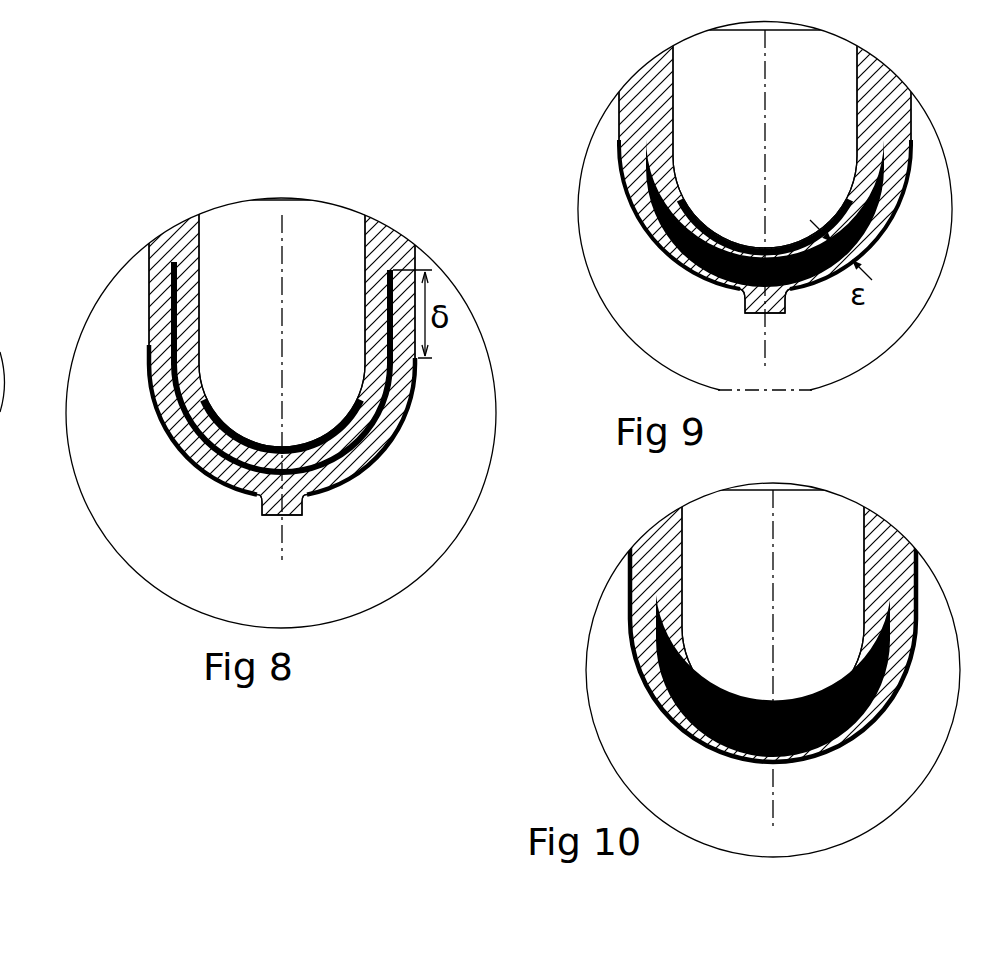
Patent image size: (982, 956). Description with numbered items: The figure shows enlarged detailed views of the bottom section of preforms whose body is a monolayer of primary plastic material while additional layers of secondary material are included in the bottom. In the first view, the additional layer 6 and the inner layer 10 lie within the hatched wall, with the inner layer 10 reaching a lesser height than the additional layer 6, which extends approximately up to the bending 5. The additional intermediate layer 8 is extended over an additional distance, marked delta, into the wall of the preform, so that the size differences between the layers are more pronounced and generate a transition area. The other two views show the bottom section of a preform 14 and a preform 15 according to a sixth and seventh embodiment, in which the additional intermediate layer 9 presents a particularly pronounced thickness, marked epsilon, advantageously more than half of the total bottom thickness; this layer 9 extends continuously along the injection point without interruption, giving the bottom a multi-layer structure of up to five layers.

In FIG. 8, the bending 5 is at (146, 357).
In FIG. 9, the bending 5 is at (910, 142).
In FIG. 10, the bending 5 is at (918, 612).
In FIG. 8, the additional layer 6 is at (194, 467).
In FIG. 9, the additional layer 6 is at (683, 277).
In FIG. 10, the additional layer 6 is at (678, 728).
In FIG. 8, the additional intermediate layer 8 is at (387, 302).
In FIG. 9, the additional intermediate layer 9 is at (672, 181).
In FIG. 10, the additional intermediate layer 9 is at (664, 628).
In FIG. 8, the inner layer 10 is at (210, 428).
In FIG. 9, the inner layer 10 is at (705, 237).
In FIG. 10, the inner layer 10 is at (708, 690).
In FIG. 9, the preform 14 is at (721, 175).
In FIG. 10, the preform 15 is at (717, 633).